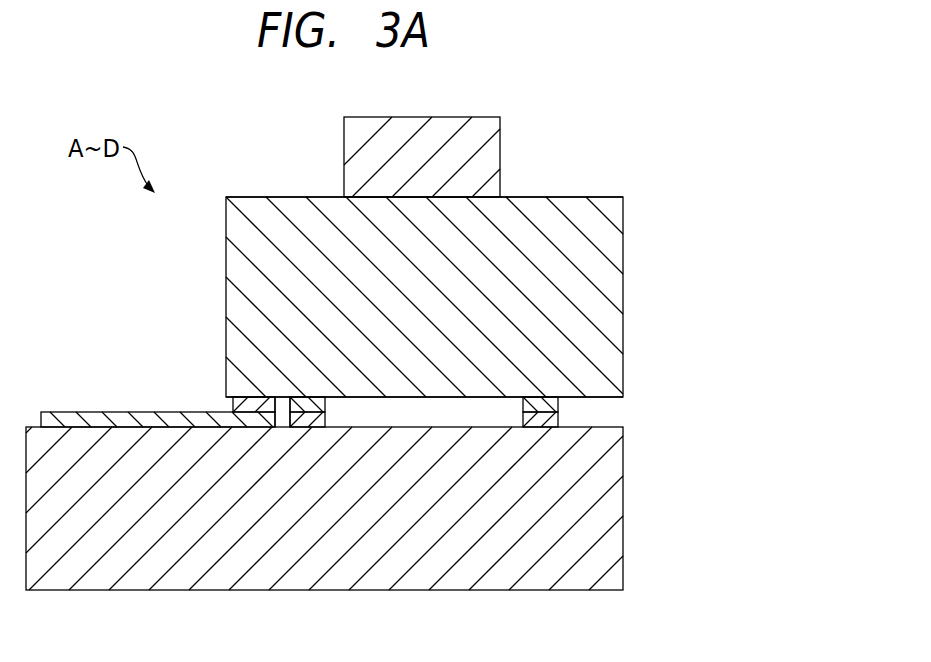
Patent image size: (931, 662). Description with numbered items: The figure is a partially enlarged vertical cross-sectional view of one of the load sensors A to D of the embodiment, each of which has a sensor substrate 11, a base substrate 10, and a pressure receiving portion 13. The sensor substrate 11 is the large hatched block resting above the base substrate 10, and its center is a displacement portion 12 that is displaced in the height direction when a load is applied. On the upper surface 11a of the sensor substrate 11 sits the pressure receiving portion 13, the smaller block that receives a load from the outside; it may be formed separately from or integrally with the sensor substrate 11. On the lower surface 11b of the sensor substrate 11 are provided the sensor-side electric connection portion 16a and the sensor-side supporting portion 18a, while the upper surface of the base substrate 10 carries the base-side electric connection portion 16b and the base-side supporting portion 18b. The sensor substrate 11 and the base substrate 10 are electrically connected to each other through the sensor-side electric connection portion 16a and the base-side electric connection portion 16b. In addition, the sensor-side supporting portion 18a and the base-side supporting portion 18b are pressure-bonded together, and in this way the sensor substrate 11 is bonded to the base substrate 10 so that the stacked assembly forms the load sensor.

The base substrate 10 is at (577, 495).
The sensor substrate 11 is at (578, 281).
The upper surface of the sensor substrate 11a is at (597, 195).
The lower surface of the sensor substrate 11b is at (593, 397).
The displacement portion 12 is at (425, 298).
The pressure receiving portion 13 is at (398, 138).
The sensor-side electric connection portion 16a is at (250, 396).
The base-side electric connection portion 16b is at (250, 422).
The sensor-side supporting portion 18a is at (328, 407).
The base-side supporting portion 18b is at (310, 422).